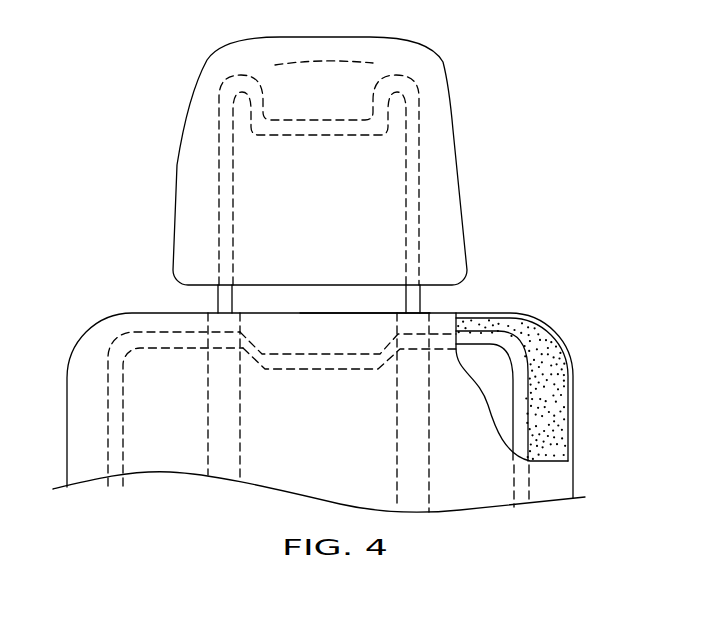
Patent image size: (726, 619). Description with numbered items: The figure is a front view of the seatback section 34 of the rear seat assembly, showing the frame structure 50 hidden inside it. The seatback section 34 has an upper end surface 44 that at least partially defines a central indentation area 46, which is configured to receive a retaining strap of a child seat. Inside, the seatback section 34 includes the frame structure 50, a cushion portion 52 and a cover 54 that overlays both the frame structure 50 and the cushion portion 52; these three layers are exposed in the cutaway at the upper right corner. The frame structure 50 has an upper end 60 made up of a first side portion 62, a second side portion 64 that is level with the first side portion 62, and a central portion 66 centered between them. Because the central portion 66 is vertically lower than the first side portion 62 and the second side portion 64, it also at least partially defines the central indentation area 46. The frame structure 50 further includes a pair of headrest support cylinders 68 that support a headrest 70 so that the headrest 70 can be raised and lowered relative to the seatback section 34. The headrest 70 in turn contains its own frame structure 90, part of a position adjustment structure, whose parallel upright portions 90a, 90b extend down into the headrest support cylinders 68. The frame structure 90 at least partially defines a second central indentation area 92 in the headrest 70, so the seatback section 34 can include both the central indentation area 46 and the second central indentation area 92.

The seatback section 34 is at (600, 208).
The upper end surface 44 is at (155, 313).
The central indentation area 46 is at (363, 313).
The frame structure 50 is at (109, 403).
The cushion portion 52 is at (553, 415).
The cover 54 is at (574, 362).
The upper end 60 is at (188, 332).
The first side portion 62 is at (145, 330).
The second side portion 64 is at (518, 343).
The central portion 66 is at (328, 353).
The headrest support cylinders 68 is at (397, 432).
The headrest 70 is at (437, 78).
The frame structure 90 is at (420, 163).
The upright portion 90a is at (421, 298).
The upright portion 90b is at (233, 300).
The second central indentation area 92 is at (314, 88).